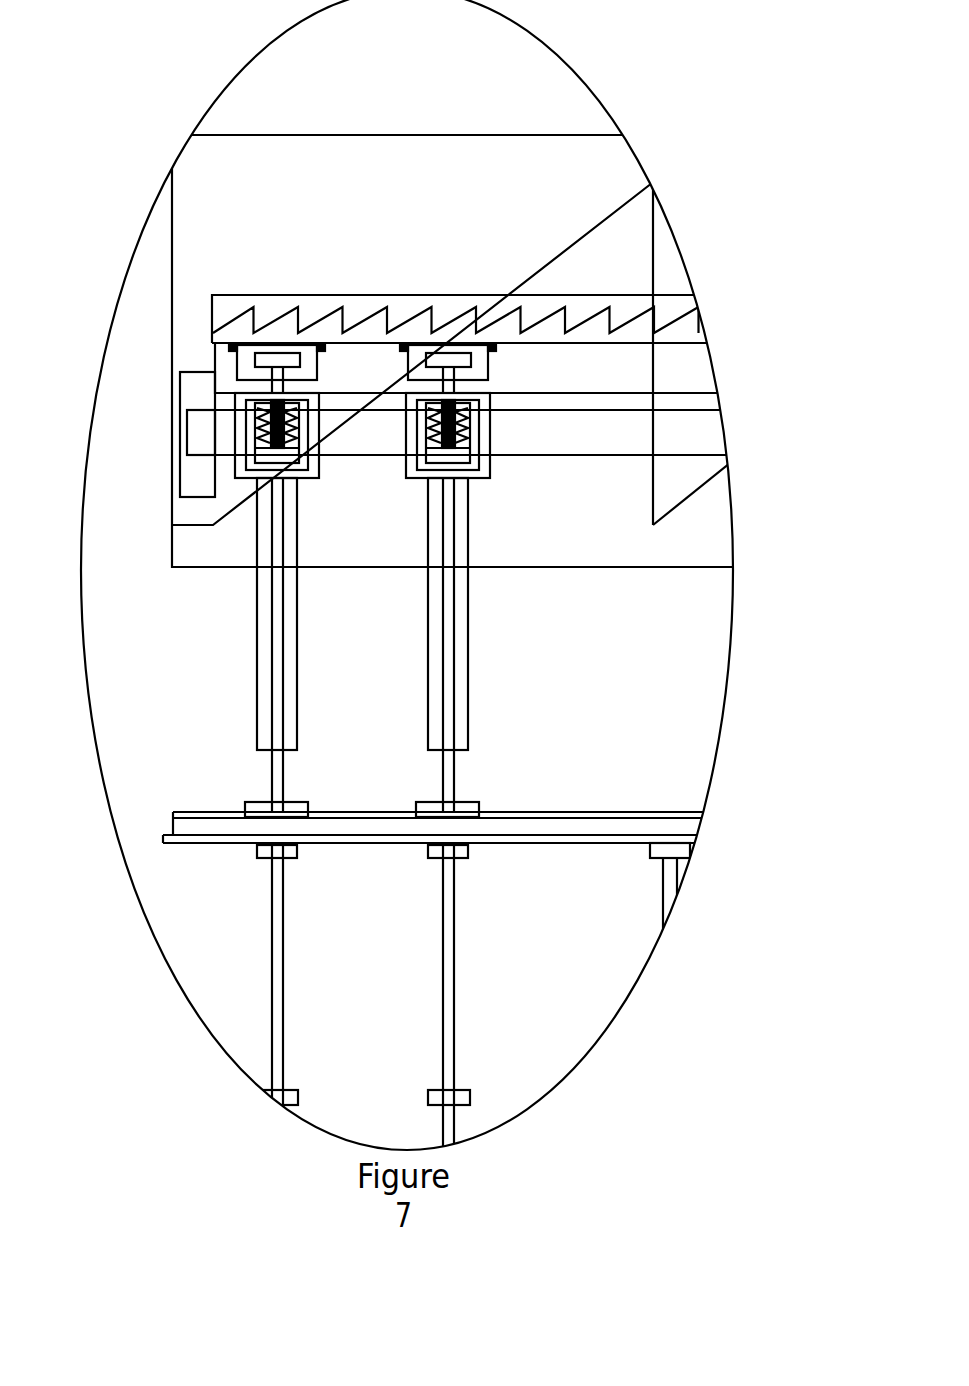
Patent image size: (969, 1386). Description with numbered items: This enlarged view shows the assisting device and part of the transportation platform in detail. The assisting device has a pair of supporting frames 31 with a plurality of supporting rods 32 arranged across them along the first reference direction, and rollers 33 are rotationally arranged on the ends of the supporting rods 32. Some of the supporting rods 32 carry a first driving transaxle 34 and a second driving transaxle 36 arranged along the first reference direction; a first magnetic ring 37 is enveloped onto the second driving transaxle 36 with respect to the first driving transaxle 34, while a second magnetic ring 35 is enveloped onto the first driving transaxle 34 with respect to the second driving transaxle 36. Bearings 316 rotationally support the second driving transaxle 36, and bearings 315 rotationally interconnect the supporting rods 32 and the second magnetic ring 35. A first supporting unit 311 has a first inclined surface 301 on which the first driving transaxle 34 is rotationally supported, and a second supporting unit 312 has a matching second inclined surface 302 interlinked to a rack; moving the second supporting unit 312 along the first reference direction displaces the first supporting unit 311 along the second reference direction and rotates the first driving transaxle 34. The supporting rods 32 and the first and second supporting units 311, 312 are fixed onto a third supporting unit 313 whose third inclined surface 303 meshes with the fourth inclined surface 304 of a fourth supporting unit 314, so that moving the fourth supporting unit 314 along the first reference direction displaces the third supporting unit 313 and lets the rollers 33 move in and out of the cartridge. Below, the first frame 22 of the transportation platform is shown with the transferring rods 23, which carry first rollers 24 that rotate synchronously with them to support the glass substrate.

The supporting frame 31 is at (383, 155).
The third supporting unit 313 is at (558, 168).
The third inclined surface 303 is at (587, 237).
The fourth inclined surface 304 is at (613, 213).
The fourth supporting unit 314 is at (625, 273).
The second supporting unit 312 is at (275, 305).
The second inclined surface 302 is at (233, 315).
The first inclined surface 301 is at (215, 330).
The first supporting unit 311 is at (213, 340).
The bearings 316 is at (193, 382).
The bearings 315 is at (240, 480).
The first magnetic ring 37 is at (237, 393).
The second driving transaxle 36 is at (246, 440).
The second magnetic ring 35 is at (237, 458).
The first driving transaxle 34 is at (280, 672).
The supporting rod 32 is at (265, 735).
The roller 33 is at (240, 813).
The first frame 22 is at (193, 830).
The transferring rod 23 is at (280, 1015).
The first roller 24 is at (470, 1097).